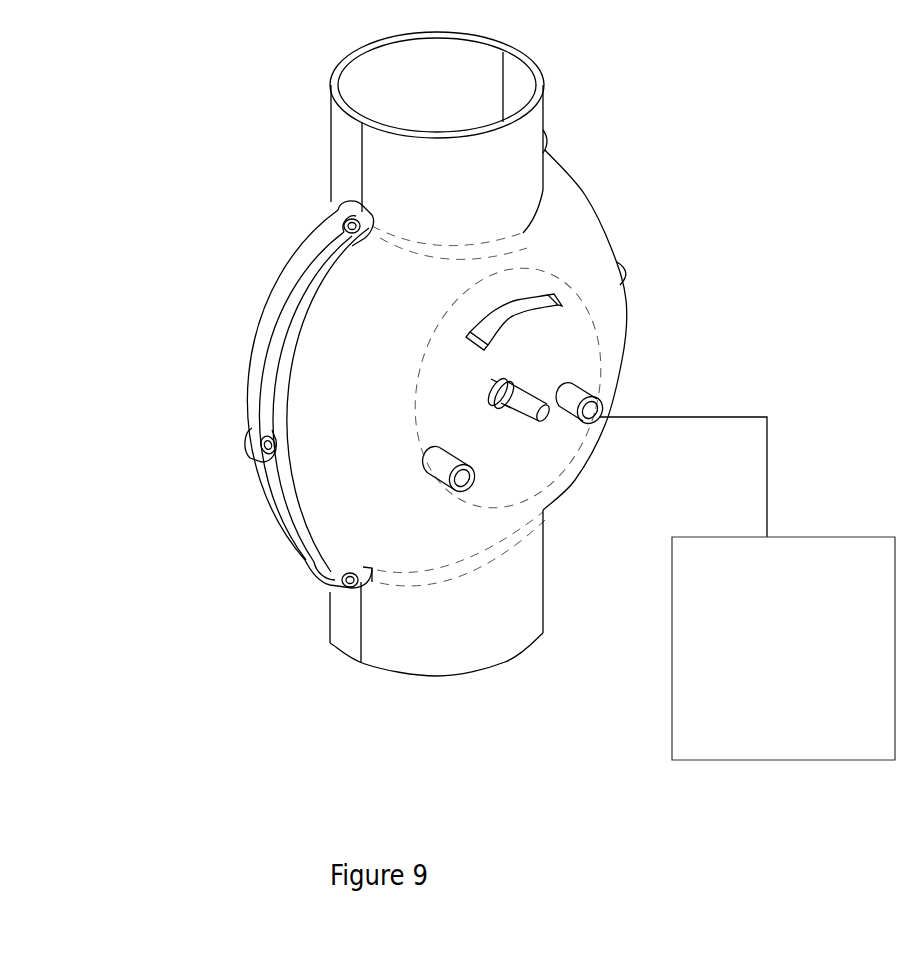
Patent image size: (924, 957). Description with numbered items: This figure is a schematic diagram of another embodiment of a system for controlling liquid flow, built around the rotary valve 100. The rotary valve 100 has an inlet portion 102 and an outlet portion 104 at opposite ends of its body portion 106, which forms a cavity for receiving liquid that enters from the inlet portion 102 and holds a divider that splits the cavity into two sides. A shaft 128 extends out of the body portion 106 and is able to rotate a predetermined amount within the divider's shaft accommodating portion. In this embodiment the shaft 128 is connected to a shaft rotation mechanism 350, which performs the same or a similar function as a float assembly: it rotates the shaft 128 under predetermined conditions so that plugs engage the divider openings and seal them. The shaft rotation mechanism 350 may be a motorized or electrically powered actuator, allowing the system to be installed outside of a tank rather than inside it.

The rotary valve 100 is at (680, 177).
The inlet portion 102 is at (325, 124).
The outlet portion 104 is at (329, 635).
The body portion 106 is at (240, 350).
The shaft 128 is at (551, 383).
The shaft rotation mechanism 350 is at (851, 577).